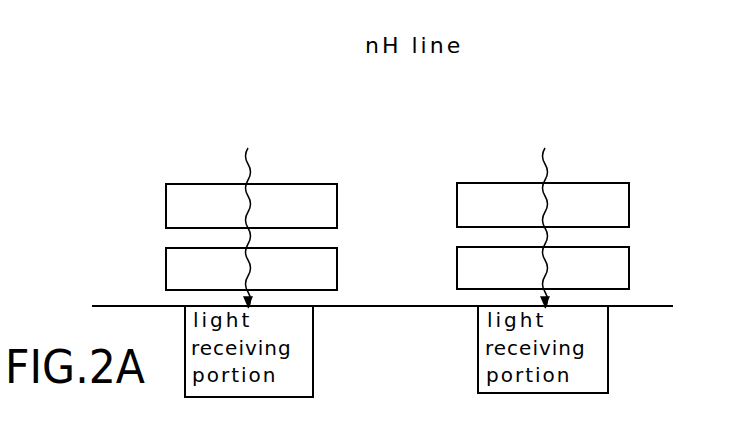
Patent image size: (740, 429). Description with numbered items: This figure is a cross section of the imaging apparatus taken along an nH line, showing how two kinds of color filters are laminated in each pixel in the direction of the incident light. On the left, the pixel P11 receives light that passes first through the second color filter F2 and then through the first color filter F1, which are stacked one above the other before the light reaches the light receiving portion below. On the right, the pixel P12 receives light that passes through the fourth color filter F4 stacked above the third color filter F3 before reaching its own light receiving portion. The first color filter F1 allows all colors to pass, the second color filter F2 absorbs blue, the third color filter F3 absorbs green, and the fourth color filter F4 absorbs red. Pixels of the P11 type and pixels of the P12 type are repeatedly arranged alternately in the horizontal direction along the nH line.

The first color filter F1 is at (251, 269).
The second color filter F2 is at (251, 206).
The third color filter F3 is at (543, 268).
The fourth color filter F4 is at (543, 205).
The pixel P11 is at (244, 195).
The pixel P12 is at (537, 195).